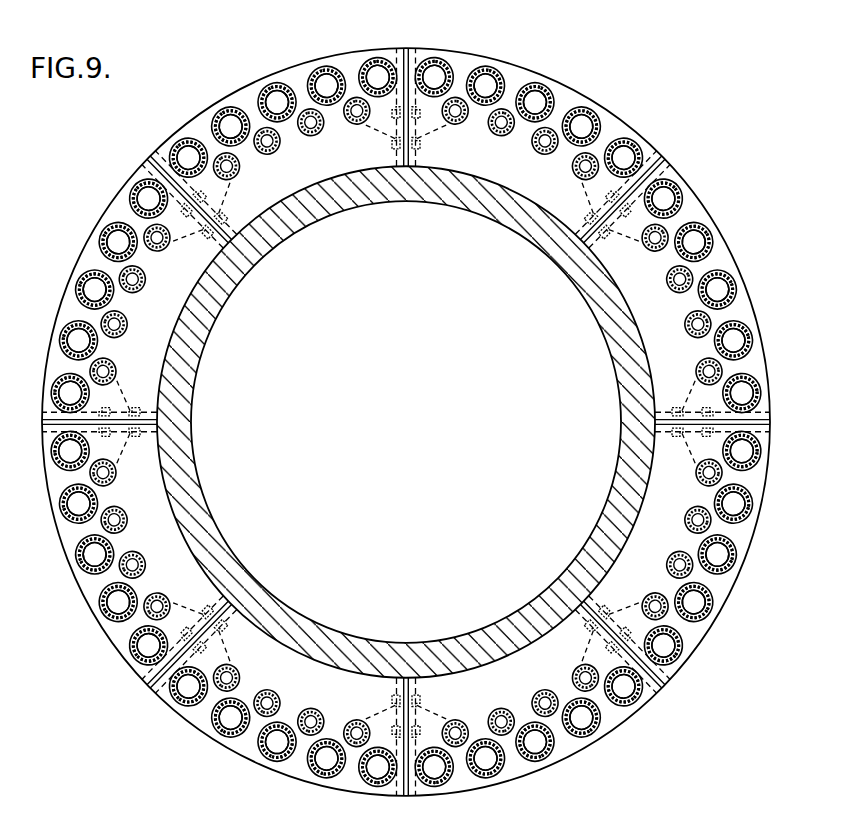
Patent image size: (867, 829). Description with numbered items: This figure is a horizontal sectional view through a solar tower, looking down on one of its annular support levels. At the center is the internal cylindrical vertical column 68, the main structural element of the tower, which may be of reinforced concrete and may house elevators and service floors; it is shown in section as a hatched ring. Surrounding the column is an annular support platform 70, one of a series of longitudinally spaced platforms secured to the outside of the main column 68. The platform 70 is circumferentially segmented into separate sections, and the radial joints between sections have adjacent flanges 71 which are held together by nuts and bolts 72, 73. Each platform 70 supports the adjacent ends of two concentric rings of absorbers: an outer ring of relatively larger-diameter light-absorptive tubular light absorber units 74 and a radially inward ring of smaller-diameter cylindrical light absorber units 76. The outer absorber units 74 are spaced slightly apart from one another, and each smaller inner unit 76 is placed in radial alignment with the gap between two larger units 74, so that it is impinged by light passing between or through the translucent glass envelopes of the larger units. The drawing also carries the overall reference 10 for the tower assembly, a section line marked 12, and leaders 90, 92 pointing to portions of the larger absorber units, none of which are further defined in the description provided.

The rotary drilling apparatus 10 is at (652, 113).
The section line 12- 12 is at (403, 695).
The internal cylindrical vertical column 68 is at (197, 508).
The support platform 70 is at (693, 208).
The adjacent flanges 71 is at (406, 418).
The nuts and bolts 72 is at (379, 391).
The nuts and bolts 73 is at (381, 392).
The tubular light absorber units 74 is at (416, 421).
The cylindrical light absorber units 76 is at (406, 421).
The bearing ball races 90 is at (417, 427).
The bearing inner rings 92 is at (411, 425).